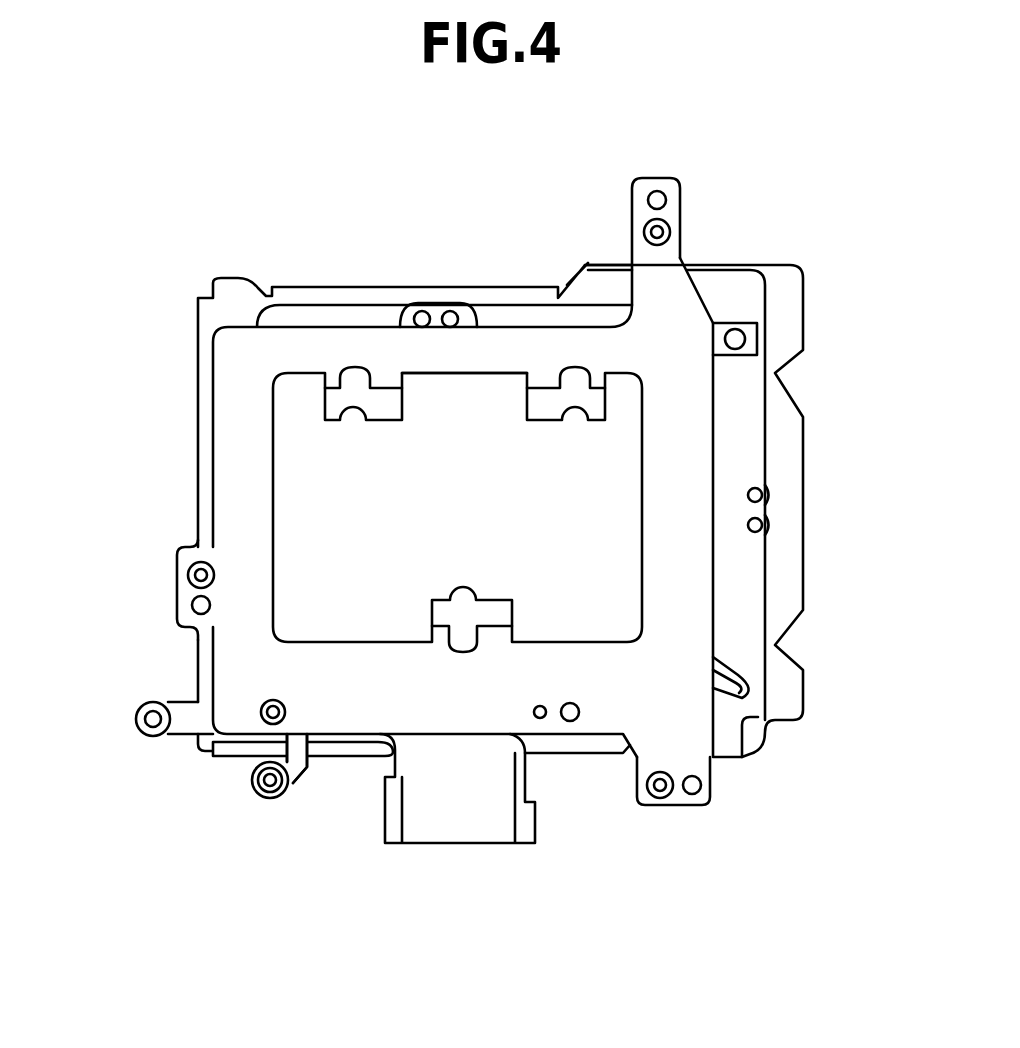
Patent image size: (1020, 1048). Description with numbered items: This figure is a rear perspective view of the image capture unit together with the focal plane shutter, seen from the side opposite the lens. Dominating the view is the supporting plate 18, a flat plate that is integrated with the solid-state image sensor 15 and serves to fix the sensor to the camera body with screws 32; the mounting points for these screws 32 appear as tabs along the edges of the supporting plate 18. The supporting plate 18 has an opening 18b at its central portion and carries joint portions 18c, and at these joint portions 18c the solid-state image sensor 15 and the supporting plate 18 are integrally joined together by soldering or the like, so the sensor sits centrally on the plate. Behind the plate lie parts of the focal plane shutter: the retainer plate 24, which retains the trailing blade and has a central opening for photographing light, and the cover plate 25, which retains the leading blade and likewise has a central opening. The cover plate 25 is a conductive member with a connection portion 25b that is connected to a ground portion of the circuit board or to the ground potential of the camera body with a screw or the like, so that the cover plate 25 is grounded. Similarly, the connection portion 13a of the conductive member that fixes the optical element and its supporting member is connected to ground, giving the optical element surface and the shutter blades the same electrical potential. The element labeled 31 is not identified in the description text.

The connection portion 13a is at (297, 770).
The solid-state image sensor 15 is at (612, 565).
The supporting plate 18 is at (698, 384).
The opening 18b is at (415, 372).
The joint portions 18c is at (548, 400).
The retainer plate 24 is at (790, 307).
The cover plate 25 is at (730, 285).
The connection portion 25b is at (150, 712).
The screw boss 31 is at (272, 800).
The screws 32 is at (644, 232).